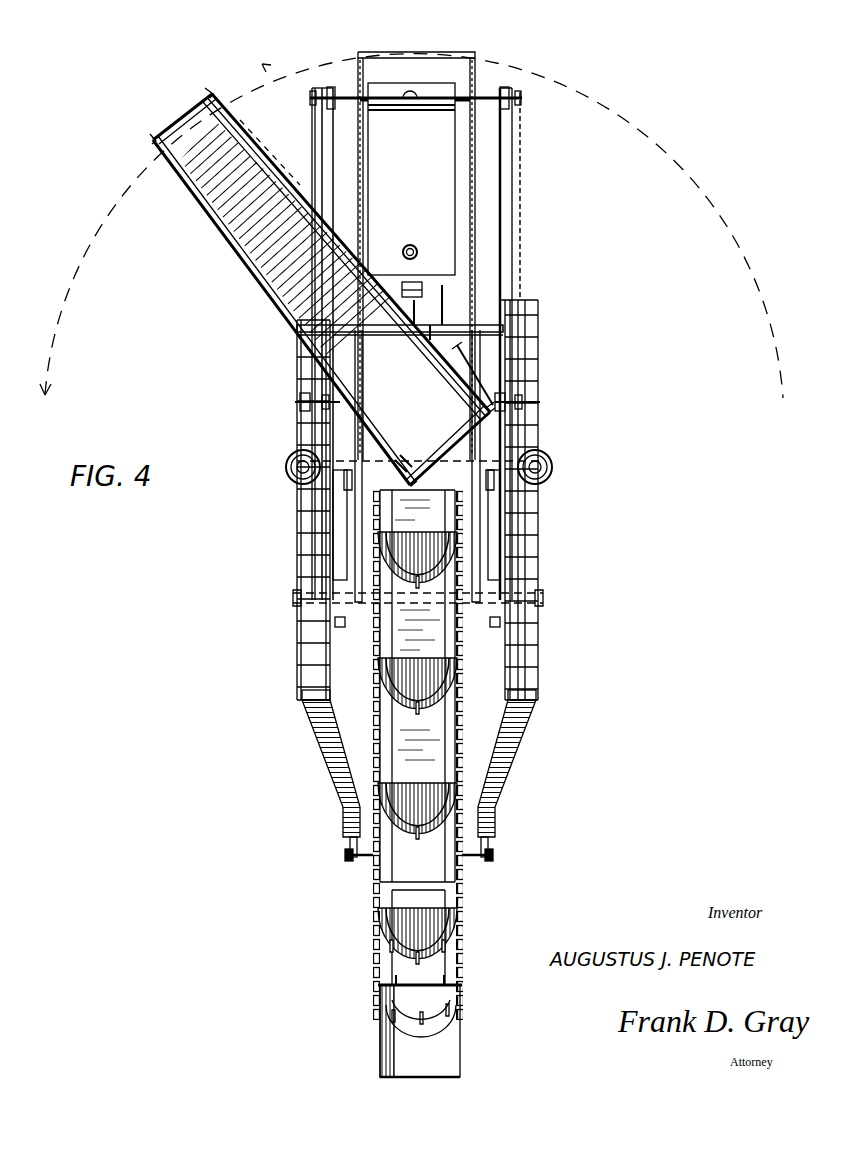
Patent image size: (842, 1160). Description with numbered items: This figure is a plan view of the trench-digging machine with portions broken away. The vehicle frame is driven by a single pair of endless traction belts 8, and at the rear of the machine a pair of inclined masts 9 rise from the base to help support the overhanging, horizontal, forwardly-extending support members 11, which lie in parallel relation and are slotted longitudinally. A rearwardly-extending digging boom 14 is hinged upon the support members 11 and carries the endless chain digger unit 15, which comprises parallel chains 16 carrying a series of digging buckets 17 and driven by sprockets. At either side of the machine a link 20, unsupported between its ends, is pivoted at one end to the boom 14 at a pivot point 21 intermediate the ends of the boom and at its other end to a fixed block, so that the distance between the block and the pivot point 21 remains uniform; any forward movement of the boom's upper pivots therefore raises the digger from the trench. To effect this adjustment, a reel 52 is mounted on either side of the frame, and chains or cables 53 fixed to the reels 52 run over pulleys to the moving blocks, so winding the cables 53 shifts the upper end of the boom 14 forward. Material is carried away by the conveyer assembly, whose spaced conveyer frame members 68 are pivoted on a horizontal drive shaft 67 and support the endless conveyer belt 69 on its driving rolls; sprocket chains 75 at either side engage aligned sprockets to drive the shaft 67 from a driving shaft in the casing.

The endless traction belts 8 is at (535, 340).
The inclined masts 9 is at (340, 620).
The support members 11 is at (508, 202).
The digging boom 14 is at (417, 737).
The endless chain digger unit 15 is at (373, 733).
The parallel chains 16 is at (463, 732).
The digging buckets 17 is at (446, 925).
The link 20 is at (325, 748).
The pivot point 21 is at (493, 855).
The reel 52 is at (298, 402).
The chains or cables 53 is at (522, 246).
The horizontal drive shaft 67 is at (400, 319).
The conveyer frame members 68 is at (285, 122).
The conveyer belt 69 is at (250, 241).
The sprocket chains 75 is at (478, 372).